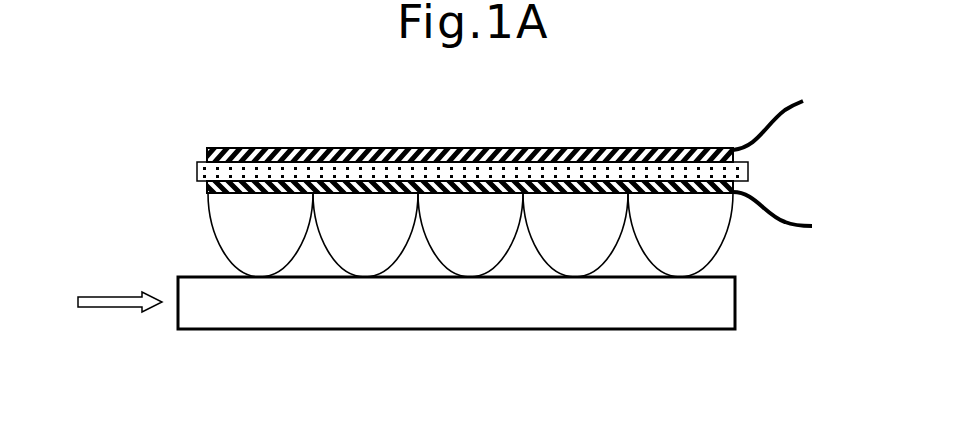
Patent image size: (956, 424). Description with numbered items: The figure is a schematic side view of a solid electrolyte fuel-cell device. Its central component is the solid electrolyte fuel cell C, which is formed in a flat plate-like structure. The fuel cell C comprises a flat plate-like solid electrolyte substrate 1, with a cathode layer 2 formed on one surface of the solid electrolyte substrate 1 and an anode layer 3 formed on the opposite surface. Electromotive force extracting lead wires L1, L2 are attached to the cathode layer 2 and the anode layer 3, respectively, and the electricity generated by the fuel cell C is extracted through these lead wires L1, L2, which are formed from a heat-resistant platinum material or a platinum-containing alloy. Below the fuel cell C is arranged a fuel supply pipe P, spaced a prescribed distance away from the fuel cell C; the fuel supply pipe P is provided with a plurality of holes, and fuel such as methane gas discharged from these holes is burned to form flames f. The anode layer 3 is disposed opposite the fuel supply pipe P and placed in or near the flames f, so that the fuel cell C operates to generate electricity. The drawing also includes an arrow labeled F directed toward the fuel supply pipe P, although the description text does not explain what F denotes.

The solid electrolyte substrate 1 is at (197, 172).
The cathode layer 2 is at (207, 155).
The anode layer 3 is at (207, 187).
The solid electrolyte fuel cell C is at (527, 142).
The lead wire L1 is at (762, 119).
The lead wire L2 is at (795, 227).
The fuel supply pipe P is at (708, 330).
The flame f is at (470, 235).
The force F is at (107, 303).